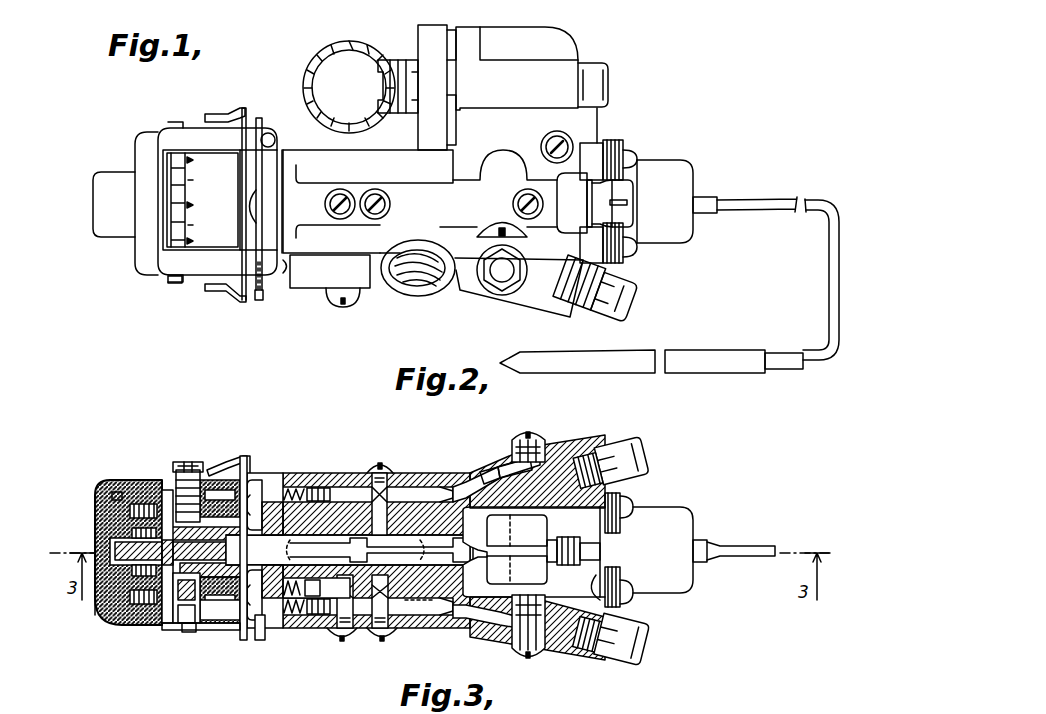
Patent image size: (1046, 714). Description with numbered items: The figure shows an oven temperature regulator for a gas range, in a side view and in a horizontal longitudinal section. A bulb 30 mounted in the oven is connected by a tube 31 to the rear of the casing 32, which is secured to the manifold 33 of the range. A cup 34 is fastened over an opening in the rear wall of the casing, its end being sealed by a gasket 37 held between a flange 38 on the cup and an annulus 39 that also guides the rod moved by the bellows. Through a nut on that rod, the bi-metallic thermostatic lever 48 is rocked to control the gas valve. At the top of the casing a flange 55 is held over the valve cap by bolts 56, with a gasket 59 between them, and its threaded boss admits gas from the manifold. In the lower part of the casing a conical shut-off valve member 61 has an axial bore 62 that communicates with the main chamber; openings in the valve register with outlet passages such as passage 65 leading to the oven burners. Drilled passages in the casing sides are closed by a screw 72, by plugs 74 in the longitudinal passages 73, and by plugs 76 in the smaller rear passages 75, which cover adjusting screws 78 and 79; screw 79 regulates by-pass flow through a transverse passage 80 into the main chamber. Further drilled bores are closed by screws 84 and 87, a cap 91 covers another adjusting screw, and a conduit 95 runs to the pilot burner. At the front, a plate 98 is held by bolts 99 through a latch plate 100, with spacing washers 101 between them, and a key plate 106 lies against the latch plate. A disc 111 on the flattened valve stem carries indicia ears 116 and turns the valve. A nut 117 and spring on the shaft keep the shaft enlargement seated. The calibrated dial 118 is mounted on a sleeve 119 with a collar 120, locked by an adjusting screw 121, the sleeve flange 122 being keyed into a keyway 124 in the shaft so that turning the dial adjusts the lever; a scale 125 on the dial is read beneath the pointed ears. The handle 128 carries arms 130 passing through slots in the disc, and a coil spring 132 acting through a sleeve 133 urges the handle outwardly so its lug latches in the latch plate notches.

In FIG. 1, the bulb 30 is at (714, 372).
In FIG. 1, the tube 31 is at (830, 275).
In FIG. 2, the tube 31 is at (758, 546).
In FIG. 1, the casing 32 is at (313, 284).
In FIG. 1, the manifold 33 is at (318, 62).
In FIG. 1, the cup 34 is at (675, 247).
In FIG. 2, the cup 34 is at (690, 518).
In FIG. 1, the gasket 37 is at (626, 150).
In FIG. 1, the flange 38 is at (630, 232).
In FIG. 1, the annulus 39 is at (618, 264).
In FIG. 2, the thermostatic lever 48 is at (592, 530).
In FIG. 1, the flange 55 is at (418, 33).
In FIG. 1, the bolts 56 is at (604, 90).
In FIG. 1, the gasket 59 is at (447, 38).
In FIG. 2, the valve member 61 is at (300, 630).
In FIG. 2, the axial bore 62 is at (448, 535).
In FIG. 1, the passage 65 is at (416, 285).
In FIG. 2, the passage 65 is at (428, 600).
In FIG. 1, the screw 72 is at (375, 219).
In FIG. 2, the longitudinal passage 73 is at (366, 630).
In FIG. 2, the plug 74 is at (323, 616).
In FIG. 2, the passage 75 is at (484, 612).
In FIG. 2, the plug 76 is at (612, 660).
In FIG. 2, the adjusting screw 78 is at (508, 460).
In FIG. 2, the adjusting screw 79 is at (545, 625).
In FIG. 2, the transverse passage 80 is at (522, 648).
In FIG. 1, the screw 84 is at (339, 198).
In FIG. 1, the screw 87 is at (355, 300).
In FIG. 1, the cap 91 is at (622, 310).
In FIG. 1, the conduit 95 is at (502, 285).
In FIG. 1, the plate 98 is at (282, 150).
In FIG. 2, the bolts 99 is at (250, 490).
In FIG. 1, the latch plate 100 is at (262, 292).
In FIG. 2, the latch plate 100 is at (262, 641).
In FIG. 1, the spacing washers 101 is at (280, 190).
In FIG. 2, the spacing washers 101 is at (276, 620).
In FIG. 1, the key plate 106 is at (258, 125).
In FIG. 2, the disc 111 is at (244, 642).
In FIG. 1, the ears 116 is at (236, 296).
In FIG. 2, the nut 117 is at (122, 626).
In FIG. 2, the dial 118 is at (185, 634).
In FIG. 2, the sleeve 119 is at (205, 625).
In FIG. 2, the collar 120 is at (162, 626).
In FIG. 2, the adjusting screw 121 is at (186, 462).
In FIG. 2, the circumferential flange 122 is at (150, 483).
In FIG. 2, the keyway 124 is at (98, 615).
In FIG. 1, the scale of temperature graduations 125 is at (205, 250).
In FIG. 1, the handle 128 is at (136, 152).
In FIG. 2, the handle 128 is at (122, 483).
In FIG. 1, the arms 130 is at (194, 130).
In FIG. 2, the coil spring 132 is at (112, 543).
In FIG. 1, the sleeve 133 is at (168, 228).
In FIG. 2, the sleeve 133 is at (100, 500).